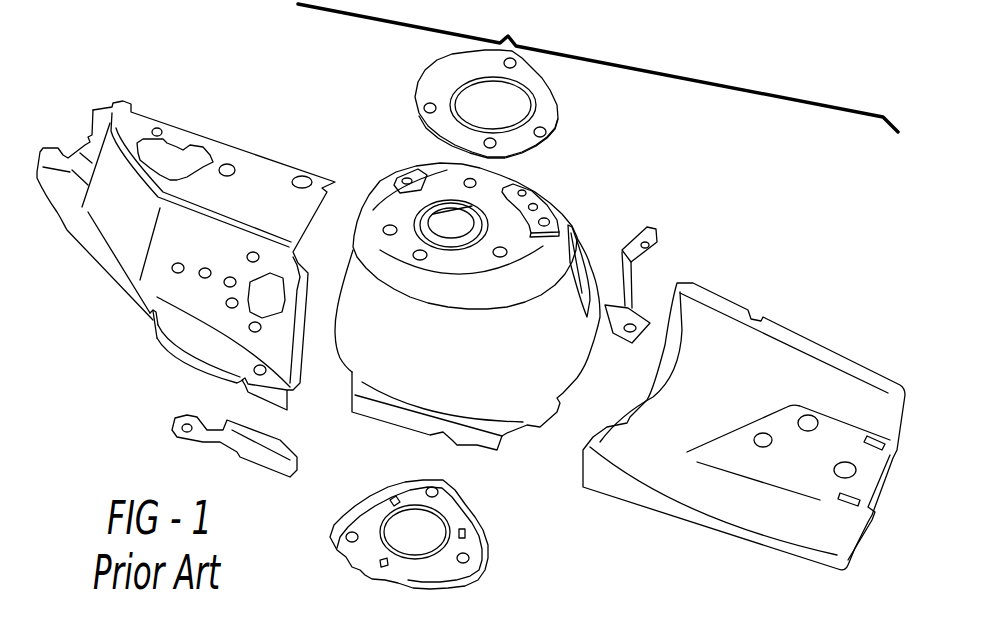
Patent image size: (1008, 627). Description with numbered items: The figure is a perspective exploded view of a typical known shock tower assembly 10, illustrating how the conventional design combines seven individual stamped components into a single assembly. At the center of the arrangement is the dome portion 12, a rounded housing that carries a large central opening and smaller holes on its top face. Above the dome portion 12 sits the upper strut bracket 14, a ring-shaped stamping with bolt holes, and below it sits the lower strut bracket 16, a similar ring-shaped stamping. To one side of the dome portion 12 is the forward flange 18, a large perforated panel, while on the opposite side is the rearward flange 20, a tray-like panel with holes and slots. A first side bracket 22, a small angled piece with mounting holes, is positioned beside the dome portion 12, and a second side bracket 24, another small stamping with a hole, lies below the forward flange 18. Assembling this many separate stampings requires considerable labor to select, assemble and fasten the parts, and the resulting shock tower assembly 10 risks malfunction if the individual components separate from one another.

The shock tower assembly 10 is at (598, 66).
The dome portion 12 is at (577, 232).
The upper strut bracket 14 is at (552, 90).
The lower strut bracket 16 is at (468, 548).
The forward flange 18 is at (257, 172).
The rearward flange 20 is at (770, 367).
The first side bracket 22 is at (657, 242).
The second side bracket 24 is at (173, 420).